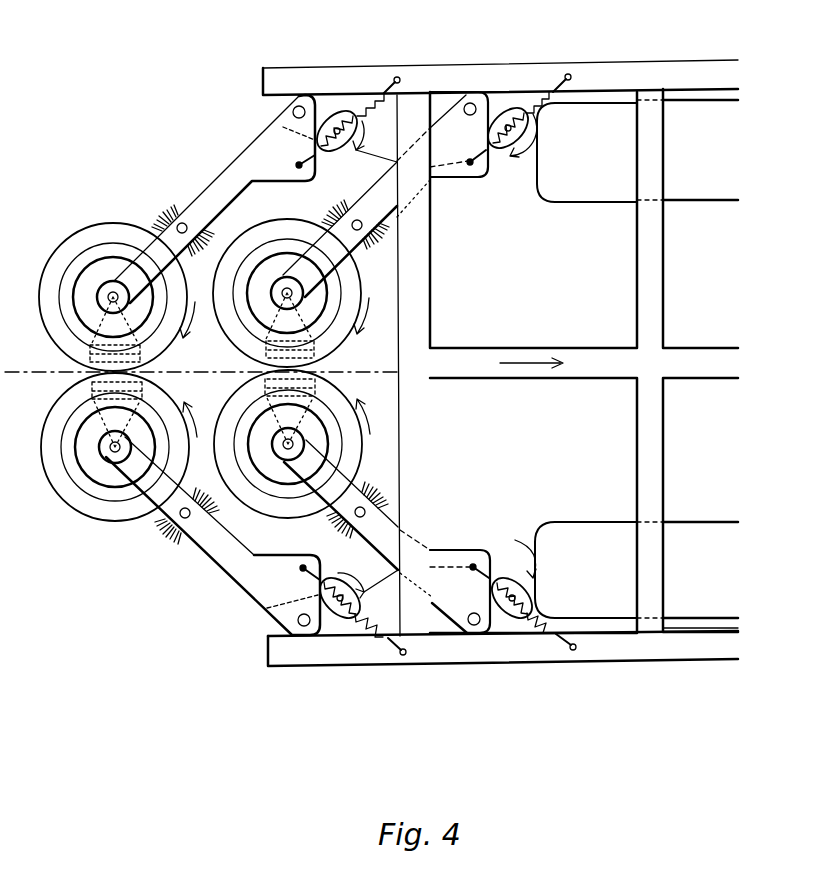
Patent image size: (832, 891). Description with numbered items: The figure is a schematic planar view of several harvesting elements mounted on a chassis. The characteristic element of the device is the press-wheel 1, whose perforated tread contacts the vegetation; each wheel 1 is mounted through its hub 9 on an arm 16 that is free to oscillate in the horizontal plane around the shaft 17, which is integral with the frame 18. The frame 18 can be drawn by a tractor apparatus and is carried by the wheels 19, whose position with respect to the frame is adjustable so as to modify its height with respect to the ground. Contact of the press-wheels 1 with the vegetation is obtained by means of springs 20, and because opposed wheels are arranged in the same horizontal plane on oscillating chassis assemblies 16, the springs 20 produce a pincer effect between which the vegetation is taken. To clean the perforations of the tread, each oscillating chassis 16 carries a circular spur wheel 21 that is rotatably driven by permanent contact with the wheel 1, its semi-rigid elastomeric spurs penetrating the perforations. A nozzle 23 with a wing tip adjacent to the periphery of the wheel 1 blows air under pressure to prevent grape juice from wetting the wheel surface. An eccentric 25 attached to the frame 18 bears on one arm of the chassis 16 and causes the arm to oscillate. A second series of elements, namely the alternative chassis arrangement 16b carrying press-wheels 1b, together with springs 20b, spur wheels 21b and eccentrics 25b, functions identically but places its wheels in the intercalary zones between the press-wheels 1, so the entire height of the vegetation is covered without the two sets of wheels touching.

The wheel 1 is at (53, 488).
The press-wheel 1b is at (297, 510).
The roller shaft hub 9 is at (110, 460).
The arm 16 is at (240, 158).
The alternative chassis arrangement 16b is at (373, 198).
The shaft 17 is at (305, 98).
The frame 18 is at (602, 358).
The wheels 19 is at (612, 542).
The springs 20 is at (390, 76).
The springs 20b is at (553, 90).
The circular spur wheel 21 is at (165, 203).
The circular spur wheel 21b is at (356, 556).
The nozzle 23 is at (60, 350).
The eccentric 25 is at (343, 616).
The eccentric 25b is at (502, 148).